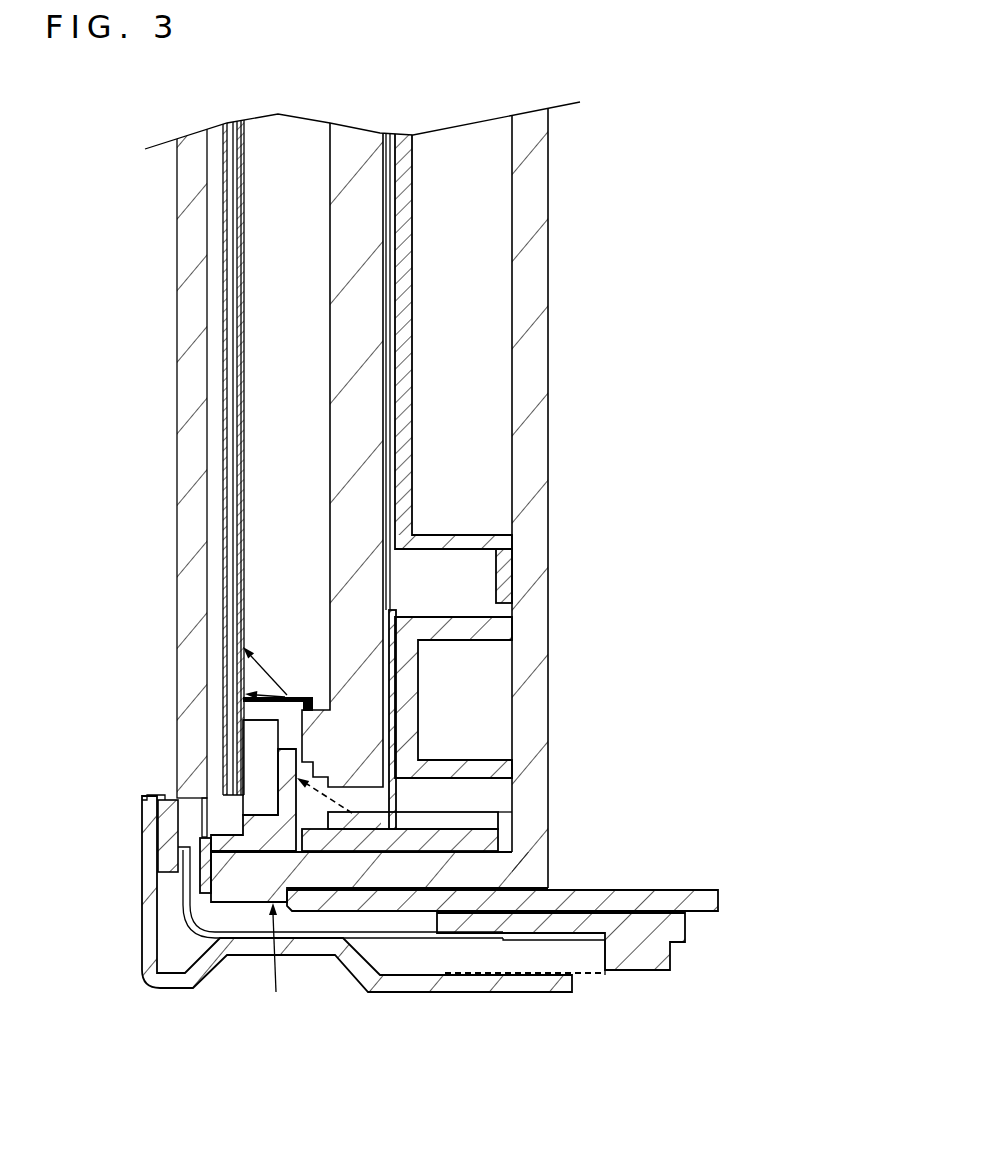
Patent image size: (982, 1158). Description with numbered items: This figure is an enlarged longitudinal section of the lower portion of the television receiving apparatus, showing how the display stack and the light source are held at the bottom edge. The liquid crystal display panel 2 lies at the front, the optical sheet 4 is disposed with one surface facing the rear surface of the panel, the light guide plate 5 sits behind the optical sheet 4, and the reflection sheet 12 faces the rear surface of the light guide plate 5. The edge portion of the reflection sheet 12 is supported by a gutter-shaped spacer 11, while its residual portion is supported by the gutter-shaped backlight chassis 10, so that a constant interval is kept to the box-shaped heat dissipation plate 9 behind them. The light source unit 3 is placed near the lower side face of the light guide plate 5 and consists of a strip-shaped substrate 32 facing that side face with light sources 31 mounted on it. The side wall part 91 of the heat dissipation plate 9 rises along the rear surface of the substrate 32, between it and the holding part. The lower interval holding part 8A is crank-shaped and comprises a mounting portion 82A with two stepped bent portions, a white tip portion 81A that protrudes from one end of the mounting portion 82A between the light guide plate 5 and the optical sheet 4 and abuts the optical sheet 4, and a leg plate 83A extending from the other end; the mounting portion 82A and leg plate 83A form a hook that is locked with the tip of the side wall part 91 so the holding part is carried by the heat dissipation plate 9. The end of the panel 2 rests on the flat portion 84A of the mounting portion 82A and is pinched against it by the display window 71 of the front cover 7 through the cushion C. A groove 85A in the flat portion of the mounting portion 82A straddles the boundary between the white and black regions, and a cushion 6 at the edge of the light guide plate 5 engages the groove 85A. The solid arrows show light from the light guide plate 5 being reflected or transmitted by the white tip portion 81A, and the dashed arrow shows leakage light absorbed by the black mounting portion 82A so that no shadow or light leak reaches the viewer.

The liquid crystal display panel 2 is at (177, 347).
The light source unit 3 is at (492, 735).
The optical sheet 4 is at (222, 272).
The light guide plate 5 is at (330, 215).
The cushion 6 is at (323, 718).
The front cover 7 is at (180, 995).
The display window 71 is at (142, 800).
The lower interval holding part 8A is at (279, 964).
The heat dissipation plate 9 is at (550, 650).
The backlight chassis 10 is at (500, 535).
The spacer 11 is at (500, 748).
The reflection sheet 12 is at (390, 570).
The light source 31 is at (396, 813).
The substrate 32 is at (495, 840).
The tip portion 81A is at (243, 699).
The mounting portion 82A is at (278, 788).
The leg plate 83A is at (718, 897).
The flat portion 84A is at (216, 893).
The groove 85A is at (250, 710).
The side wall part 91 is at (388, 876).
The cushion C is at (162, 877).